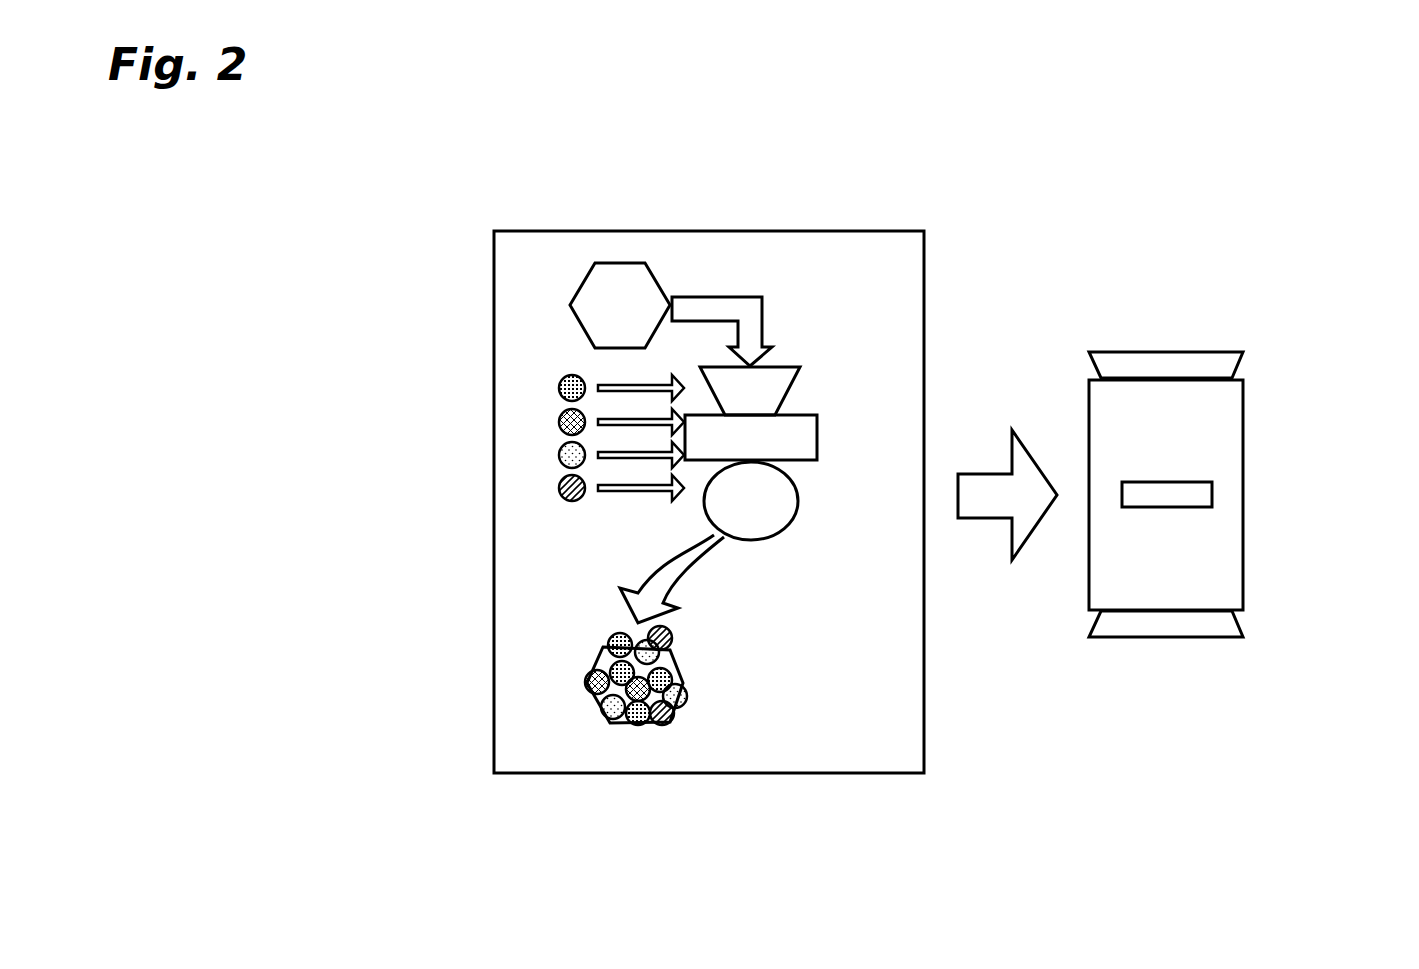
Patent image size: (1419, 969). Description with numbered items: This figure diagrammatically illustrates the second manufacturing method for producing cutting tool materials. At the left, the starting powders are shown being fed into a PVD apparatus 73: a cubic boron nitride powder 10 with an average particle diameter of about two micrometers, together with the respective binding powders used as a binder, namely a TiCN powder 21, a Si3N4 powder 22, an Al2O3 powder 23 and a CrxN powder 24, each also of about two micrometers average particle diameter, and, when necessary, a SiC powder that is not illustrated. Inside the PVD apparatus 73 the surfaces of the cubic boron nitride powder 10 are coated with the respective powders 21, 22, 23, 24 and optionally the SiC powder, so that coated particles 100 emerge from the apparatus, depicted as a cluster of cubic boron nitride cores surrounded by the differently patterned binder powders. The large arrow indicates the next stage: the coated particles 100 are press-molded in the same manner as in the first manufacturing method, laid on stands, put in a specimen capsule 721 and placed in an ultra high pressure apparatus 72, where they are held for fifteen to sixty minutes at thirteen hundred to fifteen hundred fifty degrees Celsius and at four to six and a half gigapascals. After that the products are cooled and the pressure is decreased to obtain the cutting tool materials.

The cubic boron nitride powder 10 is at (570, 305).
The TiCN powder 21 is at (559, 392).
The Si3N4 powder 22 is at (559, 423).
The Al2O3 powder 23 is at (559, 457).
The CrxN powder 24 is at (559, 490).
The PVD apparatus 73 is at (792, 437).
The coated particles 100 is at (667, 735).
The ultra high pressure apparatus 72 is at (1202, 575).
The specimen capsule 721 is at (1190, 494).